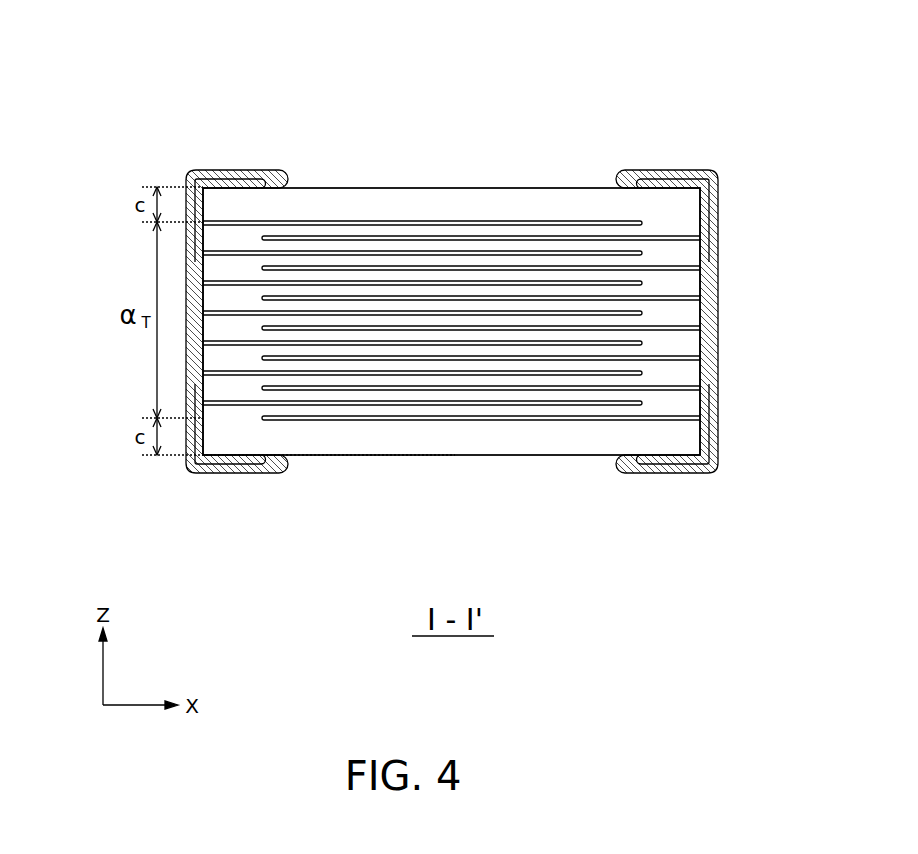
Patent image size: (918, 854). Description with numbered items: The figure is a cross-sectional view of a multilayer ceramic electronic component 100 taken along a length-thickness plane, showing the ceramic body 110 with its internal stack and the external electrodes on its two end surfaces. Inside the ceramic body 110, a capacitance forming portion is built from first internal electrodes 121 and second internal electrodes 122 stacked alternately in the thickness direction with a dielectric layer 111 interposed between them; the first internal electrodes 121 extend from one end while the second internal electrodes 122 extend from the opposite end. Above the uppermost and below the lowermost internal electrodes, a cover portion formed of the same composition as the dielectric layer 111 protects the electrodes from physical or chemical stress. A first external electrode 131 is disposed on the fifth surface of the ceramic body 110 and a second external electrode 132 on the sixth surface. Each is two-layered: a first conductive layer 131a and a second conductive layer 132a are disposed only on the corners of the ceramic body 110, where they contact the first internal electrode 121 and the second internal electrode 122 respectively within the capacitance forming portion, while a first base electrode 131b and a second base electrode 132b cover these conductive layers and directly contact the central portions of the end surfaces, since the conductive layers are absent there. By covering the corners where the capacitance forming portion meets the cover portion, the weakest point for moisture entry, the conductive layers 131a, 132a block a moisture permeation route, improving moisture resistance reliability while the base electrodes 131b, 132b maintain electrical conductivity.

The multilayer ceramic electronic component 100 is at (427, 32).
The ceramic body 110 is at (453, 455).
The dielectric layer 111 is at (692, 290).
The first internal electrode 121 is at (644, 284).
The second internal electrode 122 is at (672, 301).
The first external electrode 131 is at (238, 322).
The first conductive layer 131a is at (220, 323).
The first base electrode 131b is at (268, 180).
The second external electrode 132 is at (671, 322).
The second conductive layer 132a is at (656, 323).
The second base electrode 132b is at (690, 180).